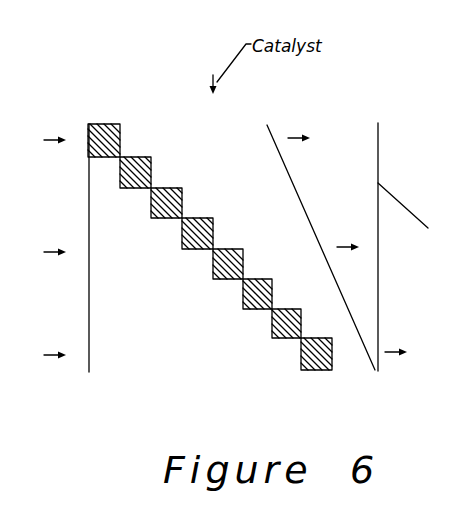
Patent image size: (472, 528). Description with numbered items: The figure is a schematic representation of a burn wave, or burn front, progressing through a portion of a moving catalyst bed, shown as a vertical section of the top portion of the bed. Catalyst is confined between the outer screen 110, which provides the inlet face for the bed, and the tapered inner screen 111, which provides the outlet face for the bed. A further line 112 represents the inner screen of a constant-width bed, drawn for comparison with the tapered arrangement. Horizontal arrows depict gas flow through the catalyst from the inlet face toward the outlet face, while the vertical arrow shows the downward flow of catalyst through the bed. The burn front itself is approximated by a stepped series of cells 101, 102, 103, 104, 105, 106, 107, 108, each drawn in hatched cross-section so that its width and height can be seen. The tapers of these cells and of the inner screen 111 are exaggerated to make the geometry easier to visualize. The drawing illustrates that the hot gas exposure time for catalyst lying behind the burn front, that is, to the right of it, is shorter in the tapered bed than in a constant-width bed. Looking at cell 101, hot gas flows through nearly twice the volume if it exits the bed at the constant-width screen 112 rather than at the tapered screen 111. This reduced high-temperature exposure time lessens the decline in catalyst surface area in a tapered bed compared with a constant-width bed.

The cell 101 is at (120, 152).
The cell 102 is at (150, 186).
The cell 103 is at (182, 216).
The cell 104 is at (213, 246).
The cell 105 is at (213, 263).
The cell 106 is at (243, 294).
The cell 107 is at (272, 324).
The cell 108 is at (301, 356).
The outer screen 110 is at (89, 255).
The tapered inner screen 111 is at (303, 200).
The inner screen of constant width bed 112 is at (428, 228).